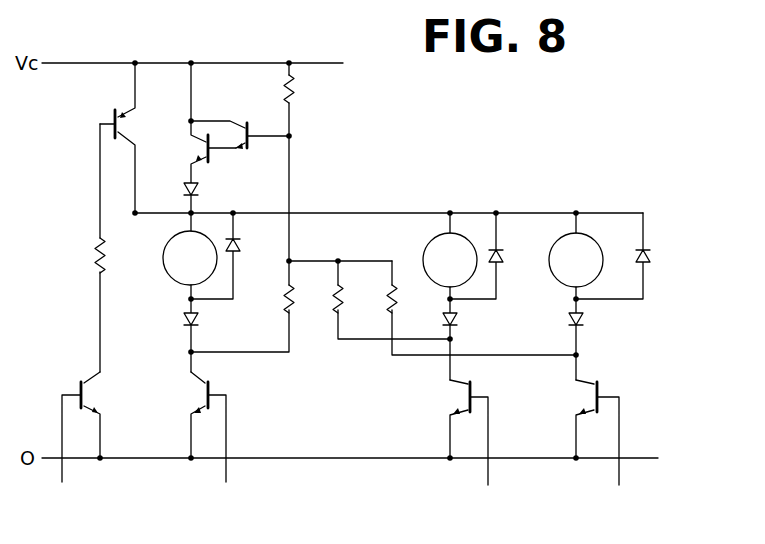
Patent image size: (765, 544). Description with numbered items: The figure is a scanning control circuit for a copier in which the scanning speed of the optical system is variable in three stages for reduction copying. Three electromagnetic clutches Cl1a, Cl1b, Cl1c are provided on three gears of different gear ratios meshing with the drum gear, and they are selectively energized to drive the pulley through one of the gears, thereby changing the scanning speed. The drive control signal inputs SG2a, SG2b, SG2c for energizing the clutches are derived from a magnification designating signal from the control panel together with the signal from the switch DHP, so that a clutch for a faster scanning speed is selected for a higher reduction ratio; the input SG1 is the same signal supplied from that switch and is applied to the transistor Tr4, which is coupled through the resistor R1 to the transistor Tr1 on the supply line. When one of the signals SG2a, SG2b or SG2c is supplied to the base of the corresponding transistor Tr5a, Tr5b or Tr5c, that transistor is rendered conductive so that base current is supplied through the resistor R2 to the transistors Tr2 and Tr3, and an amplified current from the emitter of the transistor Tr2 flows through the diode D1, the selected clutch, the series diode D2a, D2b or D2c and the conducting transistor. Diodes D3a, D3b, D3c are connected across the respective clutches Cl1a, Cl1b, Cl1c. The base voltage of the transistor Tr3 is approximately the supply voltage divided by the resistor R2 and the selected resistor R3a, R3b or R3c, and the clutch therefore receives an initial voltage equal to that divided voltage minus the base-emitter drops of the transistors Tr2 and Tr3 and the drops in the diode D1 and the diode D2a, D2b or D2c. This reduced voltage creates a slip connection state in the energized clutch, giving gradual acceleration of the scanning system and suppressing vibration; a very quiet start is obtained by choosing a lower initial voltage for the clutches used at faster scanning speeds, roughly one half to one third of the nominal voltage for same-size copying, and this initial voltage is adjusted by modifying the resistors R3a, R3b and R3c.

The transistor Tr1 is at (120, 115).
The transistor Tr2 is at (205, 147).
The transistor Tr3 is at (245, 123).
The transistor Tr4 is at (88, 392).
The transistor Tr5a is at (203, 392).
The transistor Tr5b is at (462, 397).
The transistor Tr5c is at (590, 397).
The resistor R1 is at (100, 258).
The resistor R2 is at (294, 90).
The resistor R3a is at (285, 302).
The resistor R3b is at (333, 300).
The resistor R3c is at (397, 287).
The diode D1 is at (198, 190).
The diode D2a is at (182, 316).
The diode D2b is at (460, 318).
The diode D2c is at (583, 318).
The diode D3a is at (240, 250).
The diode D3b is at (500, 262).
The diode D3c is at (650, 256).
The clutch Cl1a is at (190, 256).
The clutch Cl1b is at (450, 256).
The clutch Cl1c is at (576, 256).
The drive control signal input SG1 is at (62, 500).
The drive control signal input SG2a is at (226, 500).
The drive control signal input SG2b is at (487, 506).
The drive control signal input SG2c is at (616, 506).